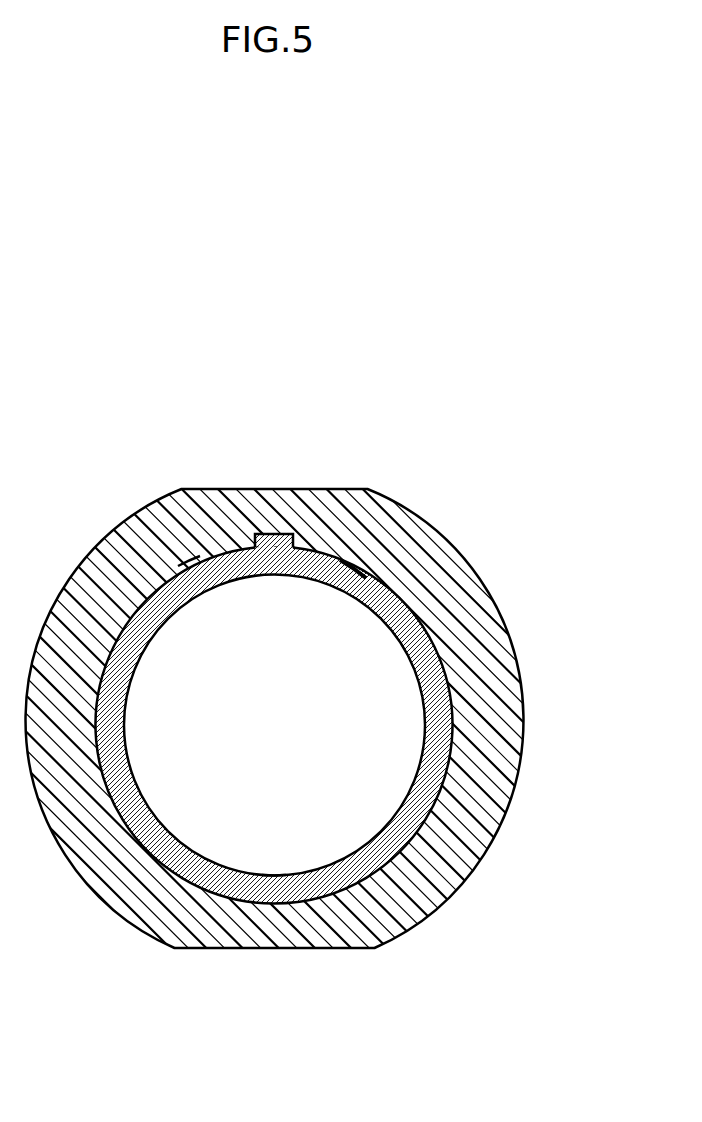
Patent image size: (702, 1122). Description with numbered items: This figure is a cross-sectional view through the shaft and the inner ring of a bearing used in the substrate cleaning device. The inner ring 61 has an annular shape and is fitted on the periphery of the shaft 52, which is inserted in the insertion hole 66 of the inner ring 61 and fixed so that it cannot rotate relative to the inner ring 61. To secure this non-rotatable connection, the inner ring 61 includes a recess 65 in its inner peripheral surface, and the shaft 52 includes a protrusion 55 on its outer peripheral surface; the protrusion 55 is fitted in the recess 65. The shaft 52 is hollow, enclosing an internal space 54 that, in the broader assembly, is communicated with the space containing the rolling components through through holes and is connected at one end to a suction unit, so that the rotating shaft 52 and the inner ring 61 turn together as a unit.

The inner ring 61 is at (485, 667).
The shaft 52 is at (440, 767).
The protrusion 55 is at (262, 533).
The recess 65 is at (290, 541).
The insertion hole 66 is at (164, 608).
The internal space 54 is at (250, 886).